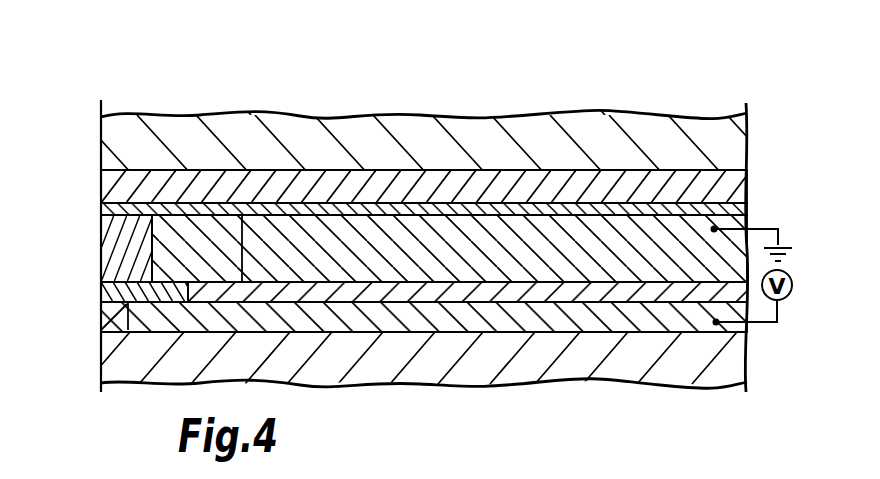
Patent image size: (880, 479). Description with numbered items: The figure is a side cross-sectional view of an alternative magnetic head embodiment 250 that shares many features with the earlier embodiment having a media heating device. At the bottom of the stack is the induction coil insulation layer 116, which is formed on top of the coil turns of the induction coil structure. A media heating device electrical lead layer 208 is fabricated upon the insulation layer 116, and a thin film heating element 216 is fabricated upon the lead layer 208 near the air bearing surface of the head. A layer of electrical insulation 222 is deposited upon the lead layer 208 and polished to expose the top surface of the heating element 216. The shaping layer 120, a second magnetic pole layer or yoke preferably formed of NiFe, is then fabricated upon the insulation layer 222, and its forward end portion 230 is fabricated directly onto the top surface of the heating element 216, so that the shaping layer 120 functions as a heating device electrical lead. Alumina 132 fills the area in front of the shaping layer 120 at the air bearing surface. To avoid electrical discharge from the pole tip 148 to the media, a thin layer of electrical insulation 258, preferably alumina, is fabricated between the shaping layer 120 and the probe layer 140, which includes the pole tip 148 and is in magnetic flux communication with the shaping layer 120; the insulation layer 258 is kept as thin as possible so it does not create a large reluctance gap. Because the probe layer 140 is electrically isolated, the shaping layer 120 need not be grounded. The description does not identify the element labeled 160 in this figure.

The magnetic head embodiment 250 is at (170, 106).
The top electrode layer 160 is at (287, 131).
The probe layer 140 is at (382, 176).
The pole tip 148 is at (105, 189).
The layer of electrical insulation 258 is at (470, 208).
The alumina 132 is at (107, 249).
The shaping layer 120 is at (536, 267).
The forward end portion of the shaping layer 230 is at (227, 267).
The thin film heating element 216 is at (123, 301).
The layer of electrical insulation 222 is at (323, 291).
The media heating device electrical lead layer 208 is at (447, 326).
The insulation layer 116 is at (630, 362).